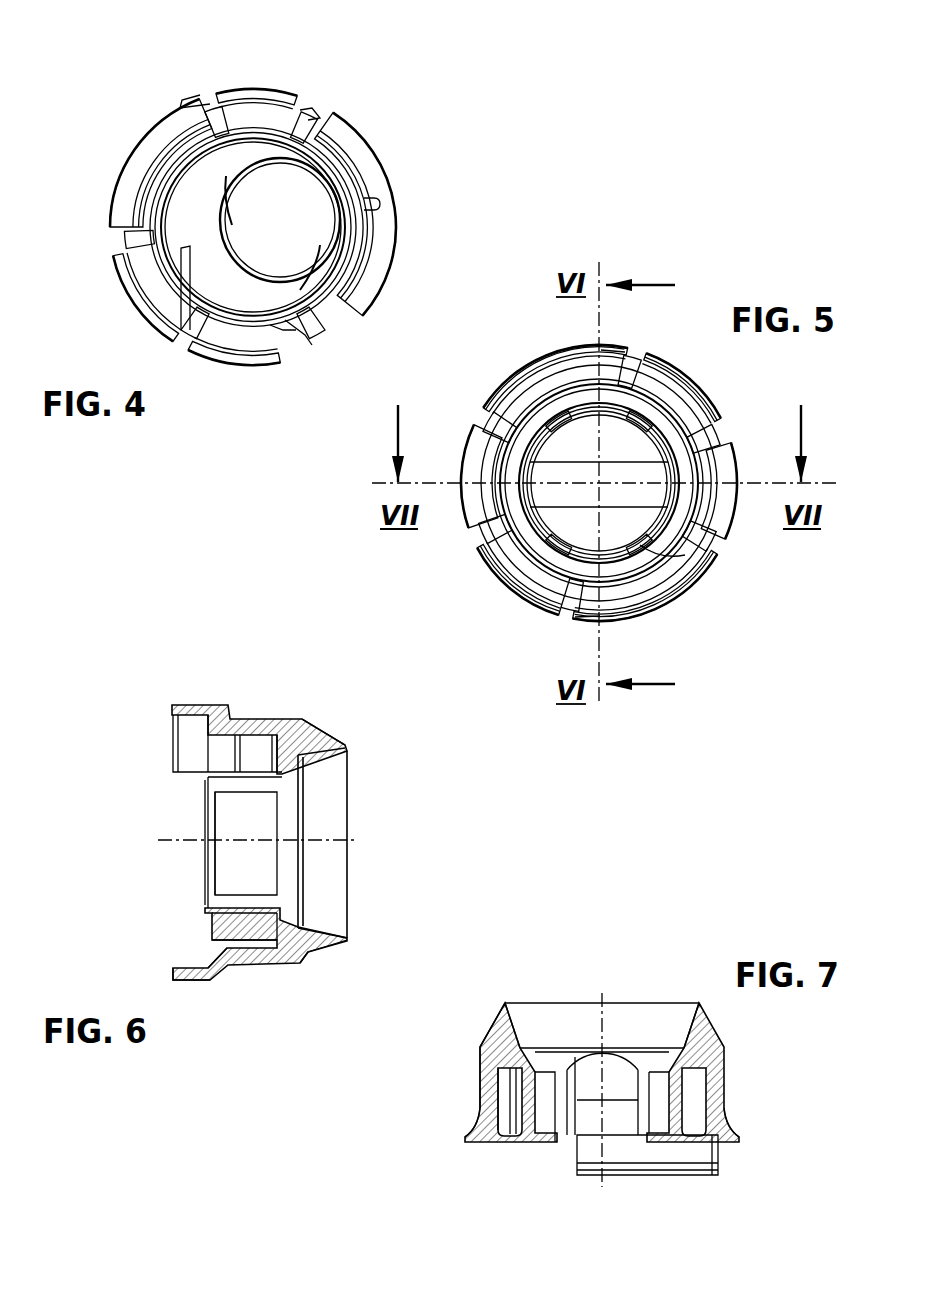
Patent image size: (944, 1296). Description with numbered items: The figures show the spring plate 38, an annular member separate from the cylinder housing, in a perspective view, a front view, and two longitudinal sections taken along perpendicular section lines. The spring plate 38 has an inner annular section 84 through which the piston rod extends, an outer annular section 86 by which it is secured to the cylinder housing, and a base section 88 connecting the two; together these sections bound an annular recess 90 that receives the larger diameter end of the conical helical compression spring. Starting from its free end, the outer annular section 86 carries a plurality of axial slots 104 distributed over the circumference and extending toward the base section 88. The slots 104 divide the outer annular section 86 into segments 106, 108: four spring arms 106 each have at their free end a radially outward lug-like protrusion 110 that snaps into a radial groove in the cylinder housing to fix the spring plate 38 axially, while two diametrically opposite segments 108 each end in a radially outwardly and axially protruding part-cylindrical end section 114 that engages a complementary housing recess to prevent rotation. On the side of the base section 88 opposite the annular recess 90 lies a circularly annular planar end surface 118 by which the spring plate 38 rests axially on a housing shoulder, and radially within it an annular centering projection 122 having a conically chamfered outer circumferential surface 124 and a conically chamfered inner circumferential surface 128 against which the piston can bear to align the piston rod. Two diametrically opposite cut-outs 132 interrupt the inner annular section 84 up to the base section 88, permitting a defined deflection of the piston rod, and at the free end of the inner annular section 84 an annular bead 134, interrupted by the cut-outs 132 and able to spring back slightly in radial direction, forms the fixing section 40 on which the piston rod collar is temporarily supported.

In FIG. 4, the spring plate 38 is at (325, 80).
In FIG. 5, the spring plate 38 is at (665, 352).
In FIG. 6, the spring plate 38 is at (300, 705).
In FIG. 7, the spring plate 38 is at (752, 1050).
In FIG. 4, the fixing section 40 is at (205, 258).
In FIG. 5, the fixing section 40 is at (545, 462).
In FIG. 6, the fixing section 40 is at (207, 832).
In FIG. 7, the fixing section 40 is at (545, 1140).
In FIG. 4, the inner annular section 84 is at (240, 288).
In FIG. 5, the inner annular section 84 is at (548, 505).
In FIG. 6, the inner annular section 84 is at (258, 822).
In FIG. 7, the inner annular section 84 is at (520, 1140).
In FIG. 4, the outer annular section 86 is at (370, 172).
In FIG. 5, the outer annular section 86 is at (490, 440).
In FIG. 6, the outer annular section 86 is at (268, 968).
In FIG. 7, the outer annular section 86 is at (725, 1095).
In FIG. 4, the base section 88 is at (235, 137).
In FIG. 5, the base section 88 is at (670, 425).
In FIG. 6, the base section 88 is at (290, 740).
In FIG. 7, the base section 88 is at (695, 1058).
In FIG. 4, the annular recess 90 is at (205, 140).
In FIG. 5, the annular recess 90 is at (560, 375).
In FIG. 6, the annular recess 90 is at (233, 928).
In FIG. 7, the annular recess 90 is at (504, 1130).
In FIG. 4, the axial slots 104 is at (215, 170).
In FIG. 5, the axial slots 104 is at (648, 433).
In FIG. 4, the segments 106 is at (330, 150).
In FIG. 5, the segments 106 is at (720, 438).
In FIG. 6, the segments 106 is at (222, 953).
In FIG. 7, the segments 106 is at (490, 1115).
In FIG. 4, the segments 108 is at (155, 180).
In FIG. 5, the segments 108 is at (500, 390).
In FIG. 6, the segments 108 is at (245, 718).
In FIG. 7, the segments 108 is at (640, 1098).
In FIG. 4, the lug-like protrusion 110 is at (320, 135).
In FIG. 5, the lug-like protrusion 110 is at (690, 370).
In FIG. 7, the lug-like protrusion 110 is at (468, 1138).
In FIG. 4, the part-cylindrical end section 114 is at (200, 100).
In FIG. 5, the part-cylindrical end section 114 is at (590, 355).
In FIG. 6, the part-cylindrical end section 114 is at (188, 705).
In FIG. 7, the part-cylindrical end section 114 is at (718, 1165).
In FIG. 6, the end surface 118 is at (300, 963).
In FIG. 7, the end surface 118 is at (480, 1047).
In FIG. 4, the centering projection 122 is at (235, 230).
In FIG. 6, the centering projection 122 is at (330, 745).
In FIG. 7, the centering projection 122 is at (520, 1012).
In FIG. 6, the outer circumferential surface 124 is at (320, 952).
In FIG. 7, the outer circumferential surface 124 is at (500, 1010).
In FIG. 4, the inner circumferential surface 128 is at (230, 198).
In FIG. 6, the inner circumferential surface 128 is at (342, 794).
In FIG. 7, the inner circumferential surface 128 is at (657, 1036).
In FIG. 4, the cut-outs 132 is at (215, 155).
In FIG. 5, the cut-outs 132 is at (605, 350).
In FIG. 4, the annular bead 134 is at (283, 330).
In FIG. 5, the annular bead 134 is at (660, 545).
In FIG. 6, the annular bead 134 is at (207, 858).
In FIG. 7, the annular bead 134 is at (667, 1137).